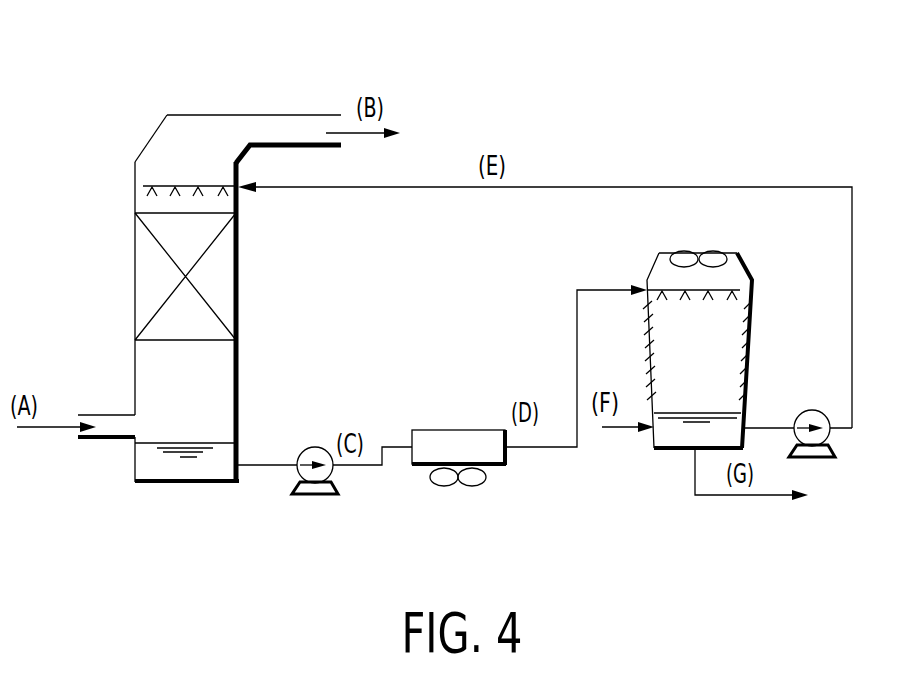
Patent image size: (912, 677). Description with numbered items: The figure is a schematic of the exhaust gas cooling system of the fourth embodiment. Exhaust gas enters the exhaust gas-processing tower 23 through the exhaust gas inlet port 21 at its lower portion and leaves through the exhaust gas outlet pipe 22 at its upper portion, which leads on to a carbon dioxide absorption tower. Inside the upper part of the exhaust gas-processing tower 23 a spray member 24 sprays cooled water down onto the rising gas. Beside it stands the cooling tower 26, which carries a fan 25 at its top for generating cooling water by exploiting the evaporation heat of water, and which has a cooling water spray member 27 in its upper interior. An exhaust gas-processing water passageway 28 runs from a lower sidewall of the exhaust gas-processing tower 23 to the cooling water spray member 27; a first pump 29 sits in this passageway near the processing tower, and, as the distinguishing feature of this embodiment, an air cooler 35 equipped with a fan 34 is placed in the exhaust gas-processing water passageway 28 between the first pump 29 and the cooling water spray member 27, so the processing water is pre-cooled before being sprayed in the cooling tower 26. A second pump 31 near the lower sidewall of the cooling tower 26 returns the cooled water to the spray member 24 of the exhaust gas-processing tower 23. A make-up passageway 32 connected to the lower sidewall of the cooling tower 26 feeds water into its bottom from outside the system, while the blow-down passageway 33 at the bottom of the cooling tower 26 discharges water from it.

The exhaust gas inlet port 21 is at (93, 414).
The exhaust gas outlet pipe 22 is at (278, 115).
The exhaust gas-processing tower 23 is at (262, 300).
The spray member 24 is at (160, 185).
The fan 25 is at (700, 250).
The cooling tower 26 is at (766, 334).
The cooling water spray member 27 is at (718, 290).
The exhaust gas-processing water passageway 28 is at (540, 455).
The first pump 29 is at (314, 498).
The second pump 31 is at (835, 444).
The make-up passageway 32 is at (618, 432).
The blow-down passageway 33 is at (740, 498).
The fan 34 is at (456, 494).
The air cooler 35 is at (460, 430).